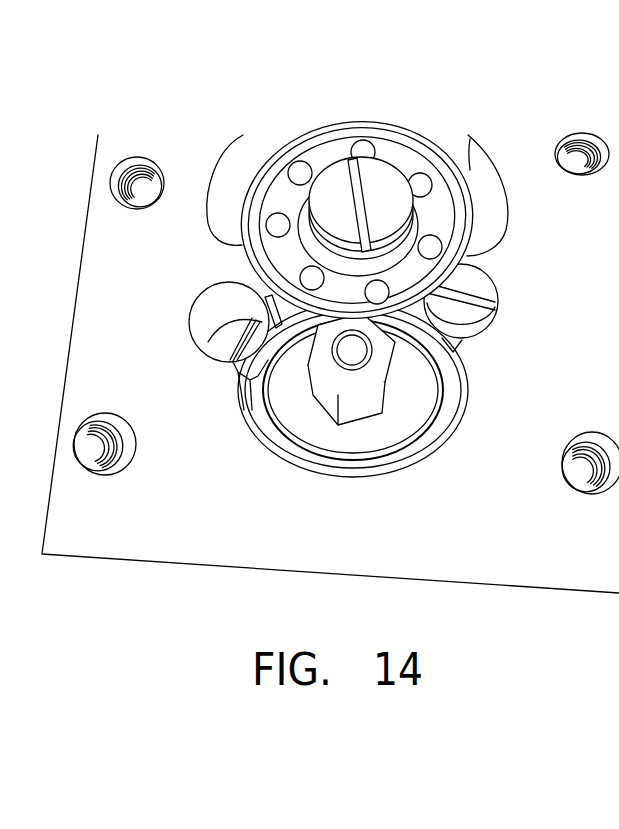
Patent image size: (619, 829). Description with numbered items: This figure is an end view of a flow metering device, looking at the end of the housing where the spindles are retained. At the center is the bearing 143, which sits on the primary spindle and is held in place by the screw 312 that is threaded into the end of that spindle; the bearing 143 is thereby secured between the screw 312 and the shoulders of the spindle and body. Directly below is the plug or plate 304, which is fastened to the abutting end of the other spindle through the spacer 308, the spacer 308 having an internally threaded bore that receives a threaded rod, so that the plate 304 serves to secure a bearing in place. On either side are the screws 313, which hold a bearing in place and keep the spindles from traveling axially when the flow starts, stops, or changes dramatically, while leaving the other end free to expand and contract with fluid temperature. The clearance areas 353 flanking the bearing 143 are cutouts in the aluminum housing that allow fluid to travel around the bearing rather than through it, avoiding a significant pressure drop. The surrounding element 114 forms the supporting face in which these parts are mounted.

The mounting plate 114 is at (500, 522).
The bearing 143 is at (435, 217).
The plate 304 is at (300, 414).
The spacer 308 is at (360, 410).
The screw 312 is at (383, 180).
The screw 313 is at (218, 338).
The clearance area 353 is at (235, 180).